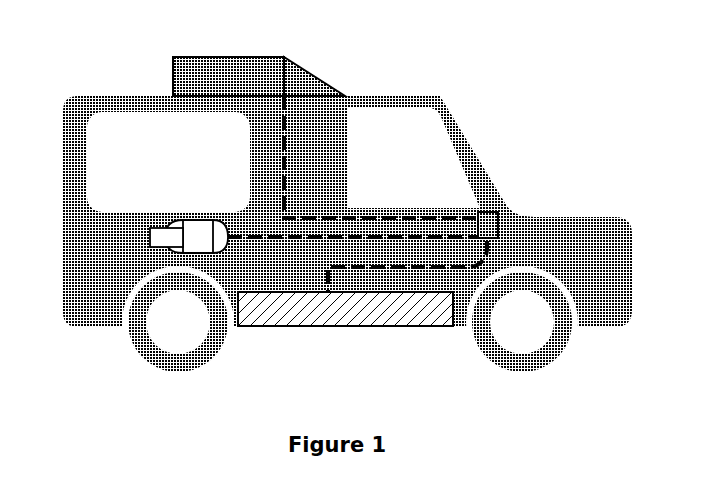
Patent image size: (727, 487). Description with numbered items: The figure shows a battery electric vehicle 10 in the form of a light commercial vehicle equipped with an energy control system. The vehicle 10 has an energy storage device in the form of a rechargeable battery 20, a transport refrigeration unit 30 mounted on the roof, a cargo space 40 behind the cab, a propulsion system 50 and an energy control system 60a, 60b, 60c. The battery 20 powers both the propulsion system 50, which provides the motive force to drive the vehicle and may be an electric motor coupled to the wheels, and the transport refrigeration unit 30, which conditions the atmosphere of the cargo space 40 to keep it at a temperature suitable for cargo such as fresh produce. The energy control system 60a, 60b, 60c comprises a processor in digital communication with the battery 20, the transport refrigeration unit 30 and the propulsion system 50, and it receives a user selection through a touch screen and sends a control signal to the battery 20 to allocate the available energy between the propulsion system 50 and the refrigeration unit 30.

The battery electric vehicle 10 is at (516, 69).
The battery 20 is at (372, 327).
The transport refrigeration unit 30 is at (198, 57).
The cargo space 40 is at (172, 176).
The propulsion system 50 is at (150, 236).
The energy control system 60a is at (499, 212).
The energy control system 60b is at (488, 225).
The energy control system 60c is at (488, 225).